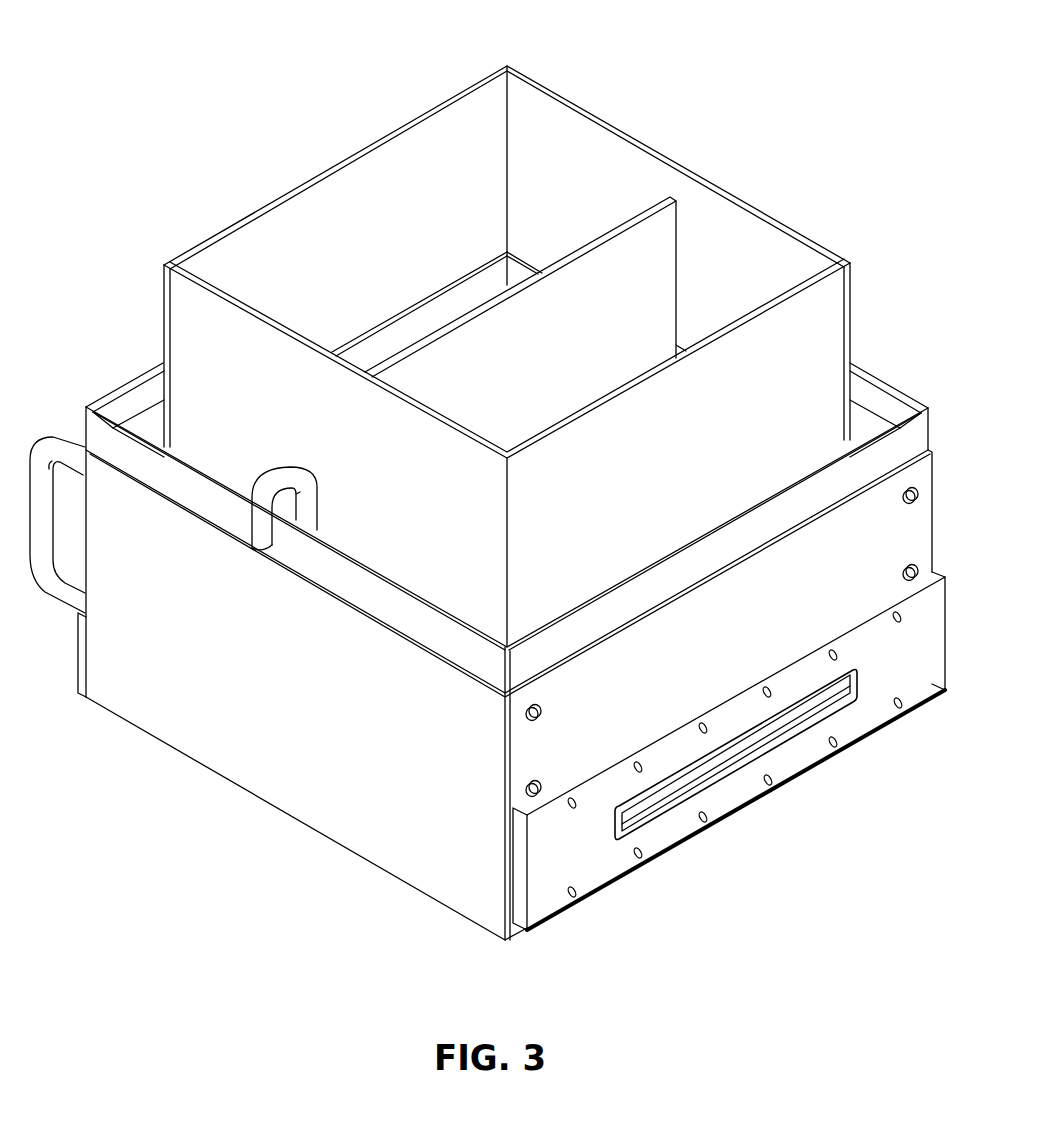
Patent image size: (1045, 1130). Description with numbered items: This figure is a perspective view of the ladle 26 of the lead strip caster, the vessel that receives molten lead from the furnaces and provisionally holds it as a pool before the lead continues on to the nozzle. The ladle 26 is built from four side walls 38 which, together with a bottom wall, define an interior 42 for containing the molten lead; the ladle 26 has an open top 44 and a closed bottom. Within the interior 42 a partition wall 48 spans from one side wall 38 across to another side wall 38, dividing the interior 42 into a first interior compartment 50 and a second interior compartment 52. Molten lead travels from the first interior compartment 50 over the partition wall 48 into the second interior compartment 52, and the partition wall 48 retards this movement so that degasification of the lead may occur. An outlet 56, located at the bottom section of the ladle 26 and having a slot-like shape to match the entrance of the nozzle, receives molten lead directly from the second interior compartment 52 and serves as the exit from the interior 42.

The ladle 26 is at (487, 534).
The side walls 38 is at (276, 235).
The interior 42 is at (495, 327).
The open top 44 is at (600, 118).
The partition wall 48 is at (658, 240).
The first interior compartment 50 is at (411, 283).
The second interior compartment 52 is at (578, 360).
The outlet 56 is at (720, 769).